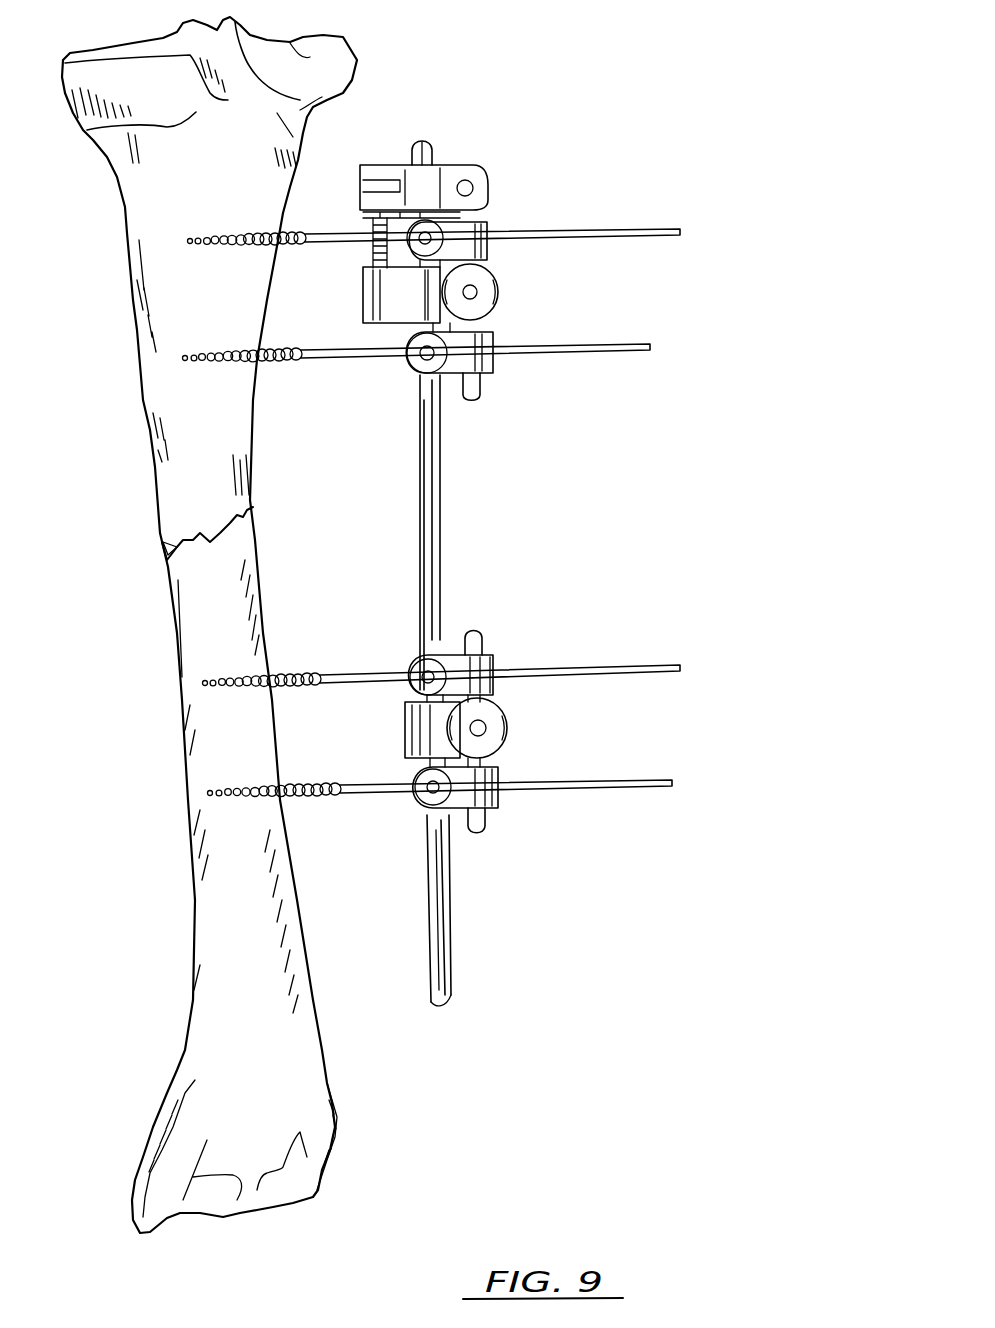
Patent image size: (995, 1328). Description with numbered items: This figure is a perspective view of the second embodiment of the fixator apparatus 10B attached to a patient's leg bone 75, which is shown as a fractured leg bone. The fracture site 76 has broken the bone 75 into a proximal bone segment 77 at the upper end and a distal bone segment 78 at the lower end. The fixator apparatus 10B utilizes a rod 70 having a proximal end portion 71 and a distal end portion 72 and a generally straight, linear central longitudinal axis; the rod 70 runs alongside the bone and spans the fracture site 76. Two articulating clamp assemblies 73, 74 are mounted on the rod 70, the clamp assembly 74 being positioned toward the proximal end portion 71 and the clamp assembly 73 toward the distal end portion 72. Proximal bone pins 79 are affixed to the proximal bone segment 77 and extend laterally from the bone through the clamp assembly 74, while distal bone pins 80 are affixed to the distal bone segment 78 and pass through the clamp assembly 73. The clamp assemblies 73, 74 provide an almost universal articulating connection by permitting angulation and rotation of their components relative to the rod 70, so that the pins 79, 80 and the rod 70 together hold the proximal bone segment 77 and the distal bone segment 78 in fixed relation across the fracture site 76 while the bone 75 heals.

The fixator apparatus 10B is at (538, 58).
The rod 70 is at (440, 523).
The proximal end portion 71 is at (437, 147).
The distal end portion 72 is at (443, 1002).
The clamp assembly 73 is at (710, 734).
The clamp assembly 74 is at (499, 256).
The leg bone 75 is at (150, 317).
The fracture site 76 is at (162, 542).
The proximal bone segment 77 is at (147, 182).
The distal bone segment 78 is at (237, 1068).
The proximal bone pins 79 is at (682, 231).
The distal bone pins 80 is at (682, 664).